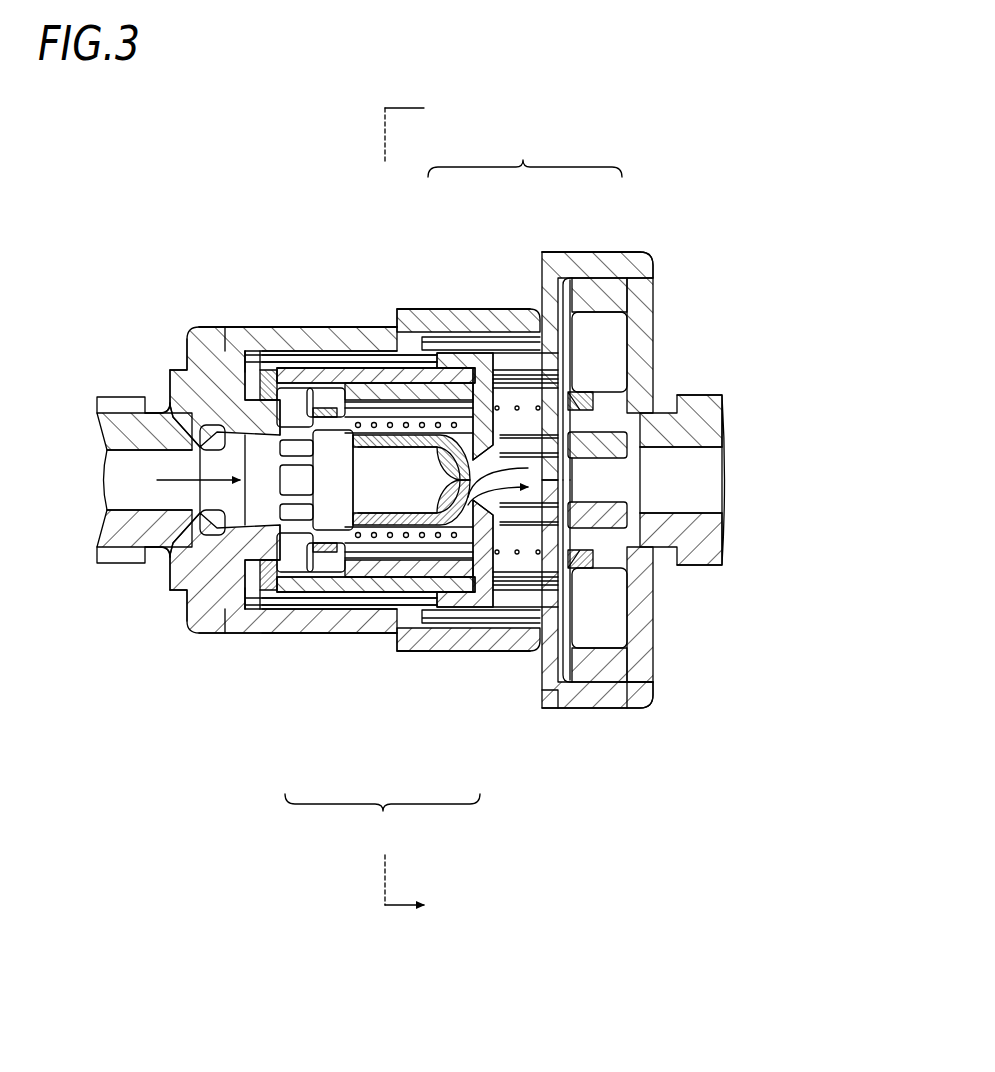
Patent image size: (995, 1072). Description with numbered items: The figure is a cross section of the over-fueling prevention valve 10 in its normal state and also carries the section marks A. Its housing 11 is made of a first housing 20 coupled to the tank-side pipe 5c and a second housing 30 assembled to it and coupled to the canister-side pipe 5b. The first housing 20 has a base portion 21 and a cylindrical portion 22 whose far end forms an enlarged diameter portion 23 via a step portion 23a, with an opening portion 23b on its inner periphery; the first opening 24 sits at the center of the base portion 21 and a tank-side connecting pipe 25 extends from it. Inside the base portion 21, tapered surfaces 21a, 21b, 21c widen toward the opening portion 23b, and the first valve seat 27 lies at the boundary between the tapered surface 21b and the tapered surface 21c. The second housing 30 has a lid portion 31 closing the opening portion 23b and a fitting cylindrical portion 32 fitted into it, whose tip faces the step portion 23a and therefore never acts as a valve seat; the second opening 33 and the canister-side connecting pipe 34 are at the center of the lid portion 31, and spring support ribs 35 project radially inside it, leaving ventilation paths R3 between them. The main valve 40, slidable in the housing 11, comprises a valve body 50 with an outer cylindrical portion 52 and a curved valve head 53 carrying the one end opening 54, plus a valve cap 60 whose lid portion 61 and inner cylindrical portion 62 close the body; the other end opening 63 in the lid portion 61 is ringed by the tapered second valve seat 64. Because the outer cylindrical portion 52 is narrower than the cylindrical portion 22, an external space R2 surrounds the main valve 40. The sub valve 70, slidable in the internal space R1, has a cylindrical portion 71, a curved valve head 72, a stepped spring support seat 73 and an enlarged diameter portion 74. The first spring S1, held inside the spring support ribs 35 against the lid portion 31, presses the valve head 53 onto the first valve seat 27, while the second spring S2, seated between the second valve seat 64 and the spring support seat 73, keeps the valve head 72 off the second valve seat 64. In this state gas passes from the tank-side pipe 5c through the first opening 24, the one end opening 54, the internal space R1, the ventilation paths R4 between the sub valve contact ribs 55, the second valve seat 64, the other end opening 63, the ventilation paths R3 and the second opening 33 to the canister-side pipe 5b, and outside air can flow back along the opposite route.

The over-fueling prevention valve 10 is at (662, 240).
The housing 11 is at (419, 230).
The first housing 20 is at (445, 305).
The second housing 30 is at (634, 243).
The base portion 21 is at (191, 333).
The tapered surface 21a is at (172, 395).
The tapered surface 21b is at (210, 392).
The tapered surface 21c is at (252, 395).
The cylindrical portion 22 is at (293, 333).
The enlarged diameter portion 23 is at (598, 702).
The step portion 23a is at (553, 660).
The opening portion 23b is at (606, 702).
The first opening 24 is at (163, 405).
The tank-side connecting pipe 25 is at (110, 428).
The first valve seat 27 is at (255, 532).
The lid portion 31 is at (643, 357).
The fitting cylindrical portion 32 is at (592, 660).
The second opening 33 is at (650, 512).
The canister-side connecting pipe 34 is at (706, 430).
The spring support ribs 35 is at (615, 572).
The main valve 40 is at (378, 604).
The valve body 50 is at (305, 602).
The outer cylindrical portion 52 is at (345, 592).
The valve head 53 is at (212, 557).
The one end opening 54 is at (228, 513).
The sub valve contact ribs 55 is at (320, 545).
The valve cap 60 is at (485, 572).
The lid portion 61 is at (470, 582).
The inner cylindrical portion 62 is at (380, 574).
The other end opening 63 is at (513, 455).
The second valve seat 64 is at (478, 352).
The sub valve 70 is at (388, 355).
The cylindrical portion 71 is at (403, 355).
The valve head 72 is at (446, 300).
The spring support seat 73 is at (362, 350).
The enlarged diameter portion 74 is at (333, 350).
The canister-side pipe 5b is at (722, 563).
The tank-side pipe 5c is at (110, 395).
The internal space R1 is at (450, 575).
The external space R2 is at (305, 335).
The ventilation path R3 is at (664, 478).
The ventilation paths R4 is at (290, 562).
The first spring S1 is at (528, 602).
The second spring S2 is at (412, 560).
The section line A- A is at (419, 506).